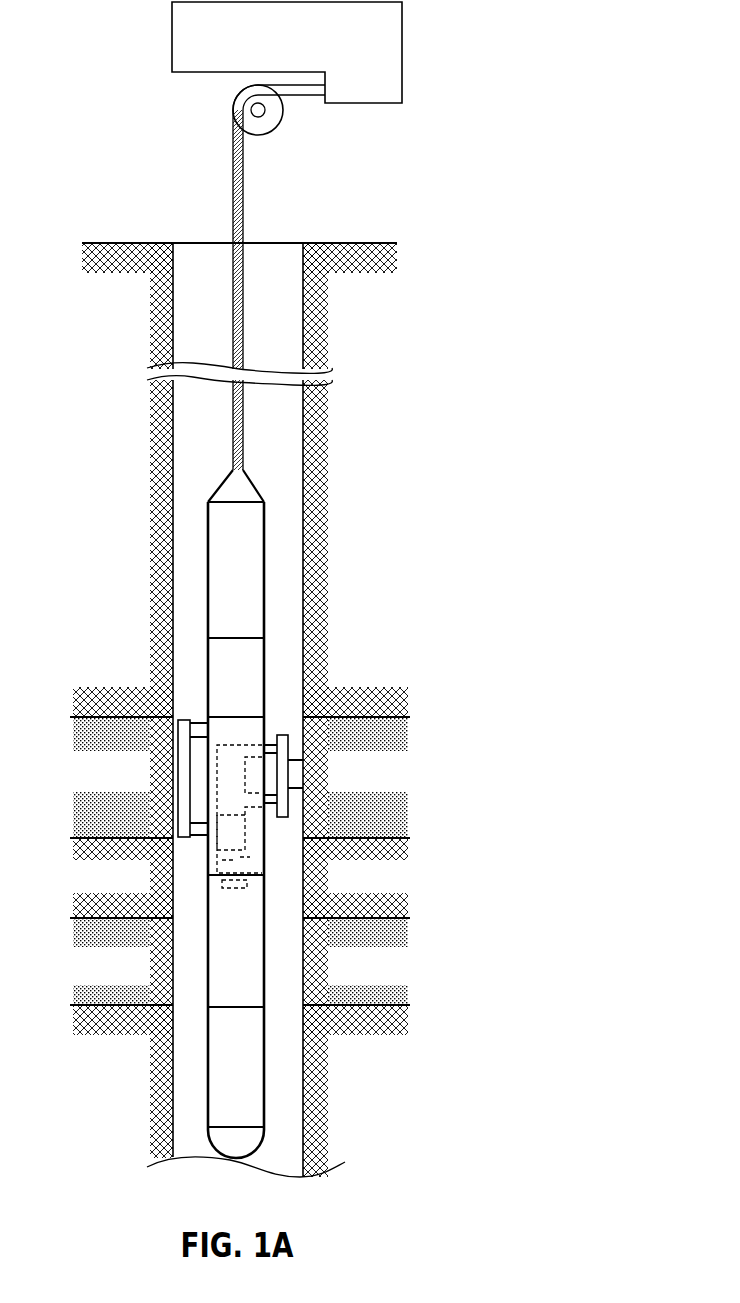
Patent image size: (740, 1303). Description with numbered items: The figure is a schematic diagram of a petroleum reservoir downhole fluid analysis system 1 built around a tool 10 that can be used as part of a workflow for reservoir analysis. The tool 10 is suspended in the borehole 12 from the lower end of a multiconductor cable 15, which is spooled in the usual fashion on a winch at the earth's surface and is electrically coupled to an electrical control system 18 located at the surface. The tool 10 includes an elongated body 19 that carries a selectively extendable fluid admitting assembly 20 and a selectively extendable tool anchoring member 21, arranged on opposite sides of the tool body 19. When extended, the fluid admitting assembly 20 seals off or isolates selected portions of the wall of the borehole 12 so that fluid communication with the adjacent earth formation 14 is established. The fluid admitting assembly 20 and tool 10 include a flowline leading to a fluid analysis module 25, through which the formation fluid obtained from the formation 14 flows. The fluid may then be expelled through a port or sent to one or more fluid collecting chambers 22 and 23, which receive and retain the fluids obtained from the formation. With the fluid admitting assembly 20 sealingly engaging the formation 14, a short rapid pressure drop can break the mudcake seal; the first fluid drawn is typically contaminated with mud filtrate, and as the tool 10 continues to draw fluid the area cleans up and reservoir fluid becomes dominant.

The well logging system 1 is at (492, 33).
The electrical control system 18 is at (370, 104).
The multiconductor cable 15 is at (232, 175).
The borehole 12 is at (302, 306).
The earth formation 14 is at (344, 787).
The tool 10 is at (284, 620).
The elongated body 19 is at (242, 562).
The tool anchoring member 21 is at (177, 780).
The fluid admitting assembly 20 is at (283, 747).
The fluid analysis module 25 is at (217, 850).
The fluid collecting chamber 22 is at (224, 952).
The fluid collecting chamber 23 is at (222, 1081).